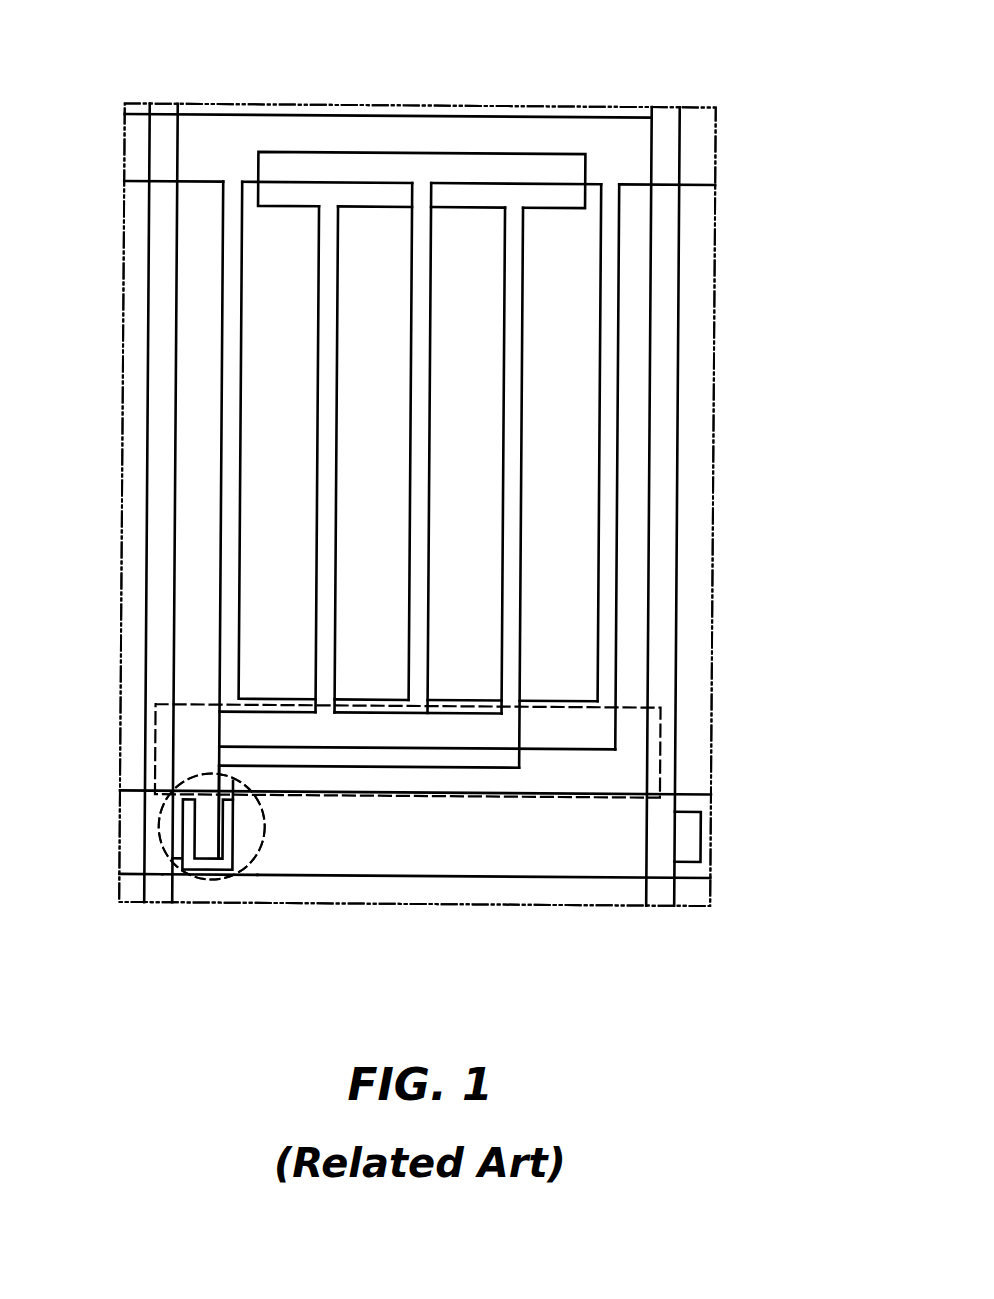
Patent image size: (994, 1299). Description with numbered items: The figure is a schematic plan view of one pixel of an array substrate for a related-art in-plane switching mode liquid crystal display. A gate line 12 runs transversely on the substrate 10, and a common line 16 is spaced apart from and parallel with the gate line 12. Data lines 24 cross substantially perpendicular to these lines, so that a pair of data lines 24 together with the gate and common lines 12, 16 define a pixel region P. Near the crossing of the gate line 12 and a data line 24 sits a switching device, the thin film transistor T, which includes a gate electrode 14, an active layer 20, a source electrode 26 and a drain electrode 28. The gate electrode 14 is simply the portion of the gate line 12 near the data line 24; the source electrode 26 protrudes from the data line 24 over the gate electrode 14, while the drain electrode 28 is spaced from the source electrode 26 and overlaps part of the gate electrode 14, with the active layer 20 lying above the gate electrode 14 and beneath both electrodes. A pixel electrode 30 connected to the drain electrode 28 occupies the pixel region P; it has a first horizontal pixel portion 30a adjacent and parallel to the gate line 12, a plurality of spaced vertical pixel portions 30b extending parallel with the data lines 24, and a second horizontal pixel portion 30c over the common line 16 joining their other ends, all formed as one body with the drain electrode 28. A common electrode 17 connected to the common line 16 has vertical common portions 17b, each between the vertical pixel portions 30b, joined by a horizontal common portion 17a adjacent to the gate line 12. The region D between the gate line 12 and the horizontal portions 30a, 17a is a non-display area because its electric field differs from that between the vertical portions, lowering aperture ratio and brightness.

The substrate 10 is at (716, 489).
The gate line 12 is at (508, 882).
The gate electrode 14 is at (202, 880).
The common line 16 is at (577, 111).
The common electrode 17 is at (568, 947).
The horizontal common portion 17a is at (560, 735).
The vertical common portions 17b is at (605, 685).
The active layer 20 is at (208, 795).
The data lines 24 is at (147, 489).
The source electrode 26 is at (187, 810).
The drain electrode 28 is at (262, 877).
The pixel electrode 30 is at (405, 957).
The first horizontal pixel portion 30a is at (407, 767).
The vertical pixel portions 30b is at (505, 680).
The second horizontal pixel portion 30c is at (588, 173).
The pixel region P is at (684, 320).
The region D is at (664, 740).
The thin film transistor T is at (228, 883).